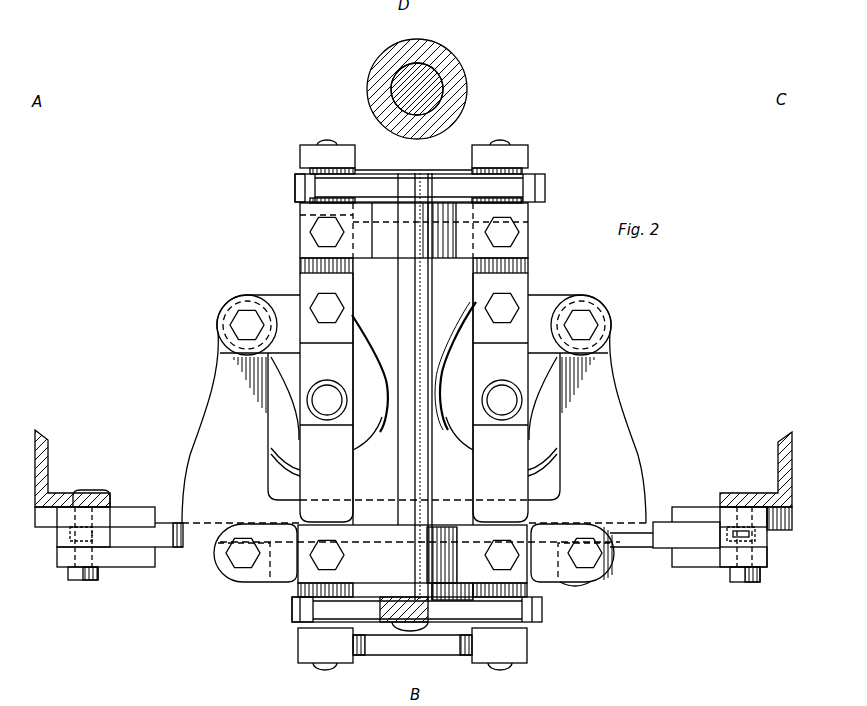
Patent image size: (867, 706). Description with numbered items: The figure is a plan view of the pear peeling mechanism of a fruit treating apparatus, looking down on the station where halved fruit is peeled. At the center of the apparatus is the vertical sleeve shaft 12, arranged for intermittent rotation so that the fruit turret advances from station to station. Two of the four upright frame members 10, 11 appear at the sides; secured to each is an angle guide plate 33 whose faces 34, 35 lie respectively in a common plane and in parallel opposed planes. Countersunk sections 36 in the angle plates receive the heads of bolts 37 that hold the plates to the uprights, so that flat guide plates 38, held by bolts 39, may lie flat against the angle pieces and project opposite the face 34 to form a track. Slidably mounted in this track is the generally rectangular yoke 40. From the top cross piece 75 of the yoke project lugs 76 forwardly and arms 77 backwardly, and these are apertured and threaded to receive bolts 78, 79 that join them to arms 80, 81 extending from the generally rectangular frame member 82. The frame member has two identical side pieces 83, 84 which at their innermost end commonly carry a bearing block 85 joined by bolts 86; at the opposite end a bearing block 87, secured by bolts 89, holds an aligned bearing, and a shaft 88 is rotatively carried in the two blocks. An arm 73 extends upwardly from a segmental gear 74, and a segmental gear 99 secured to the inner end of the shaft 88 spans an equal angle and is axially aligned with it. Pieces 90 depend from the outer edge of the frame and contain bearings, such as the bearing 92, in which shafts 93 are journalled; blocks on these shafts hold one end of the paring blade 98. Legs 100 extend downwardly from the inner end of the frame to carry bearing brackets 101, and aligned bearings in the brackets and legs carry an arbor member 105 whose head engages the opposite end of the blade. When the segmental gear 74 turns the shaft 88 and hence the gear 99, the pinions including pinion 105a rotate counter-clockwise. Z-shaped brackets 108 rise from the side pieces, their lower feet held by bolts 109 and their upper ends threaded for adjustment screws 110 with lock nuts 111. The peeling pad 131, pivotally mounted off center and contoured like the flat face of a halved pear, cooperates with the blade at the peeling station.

The upright frame member 10 is at (47, 472).
The upright frame member 11 is at (781, 453).
The vertical sleeve shaft 12 is at (453, 92).
The angle guide plate 33 is at (126, 508).
The face 34 is at (686, 520).
The face 35 is at (716, 548).
The countersunk section 36 is at (760, 537).
The bolt 37 is at (766, 556).
The flat guide plate 38 is at (134, 556).
The bolt 39 is at (738, 584).
The yoke 40 is at (648, 549).
The arm 73 is at (396, 618).
The segmental gear 74 is at (536, 614).
The top cross piece 75 is at (642, 552).
The lug 76 is at (236, 580).
The arm 77 is at (196, 440).
The bolt 78 is at (588, 325).
The bolt 79 is at (593, 584).
The arm 80 is at (231, 342).
The arm 81 is at (216, 562).
The frame member 82 is at (473, 482).
The side piece 83 is at (518, 268).
The side piece 84 is at (302, 267).
The bearing block 85 is at (388, 255).
The bolt 86 is at (517, 232).
The bearing block 87 is at (431, 537).
The shaft 88 is at (400, 471).
The bolt 89 is at (320, 559).
The piece 90 is at (300, 652).
The bearing 92 is at (296, 609).
The shaft 93 is at (325, 668).
The paring blade 98 is at (291, 466).
The segmental gear 99 is at (546, 190).
The leg 100 is at (530, 212).
The bearing bracket 101 is at (530, 160).
The arbor member 105 is at (327, 146).
The pinion 105a is at (296, 184).
The Z-shaped bracket 108 is at (353, 326).
The bolt 109 is at (322, 310).
The adjustment screw 110 is at (328, 396).
The lock nut 111 is at (503, 392).
The peeling pad 131 is at (372, 422).